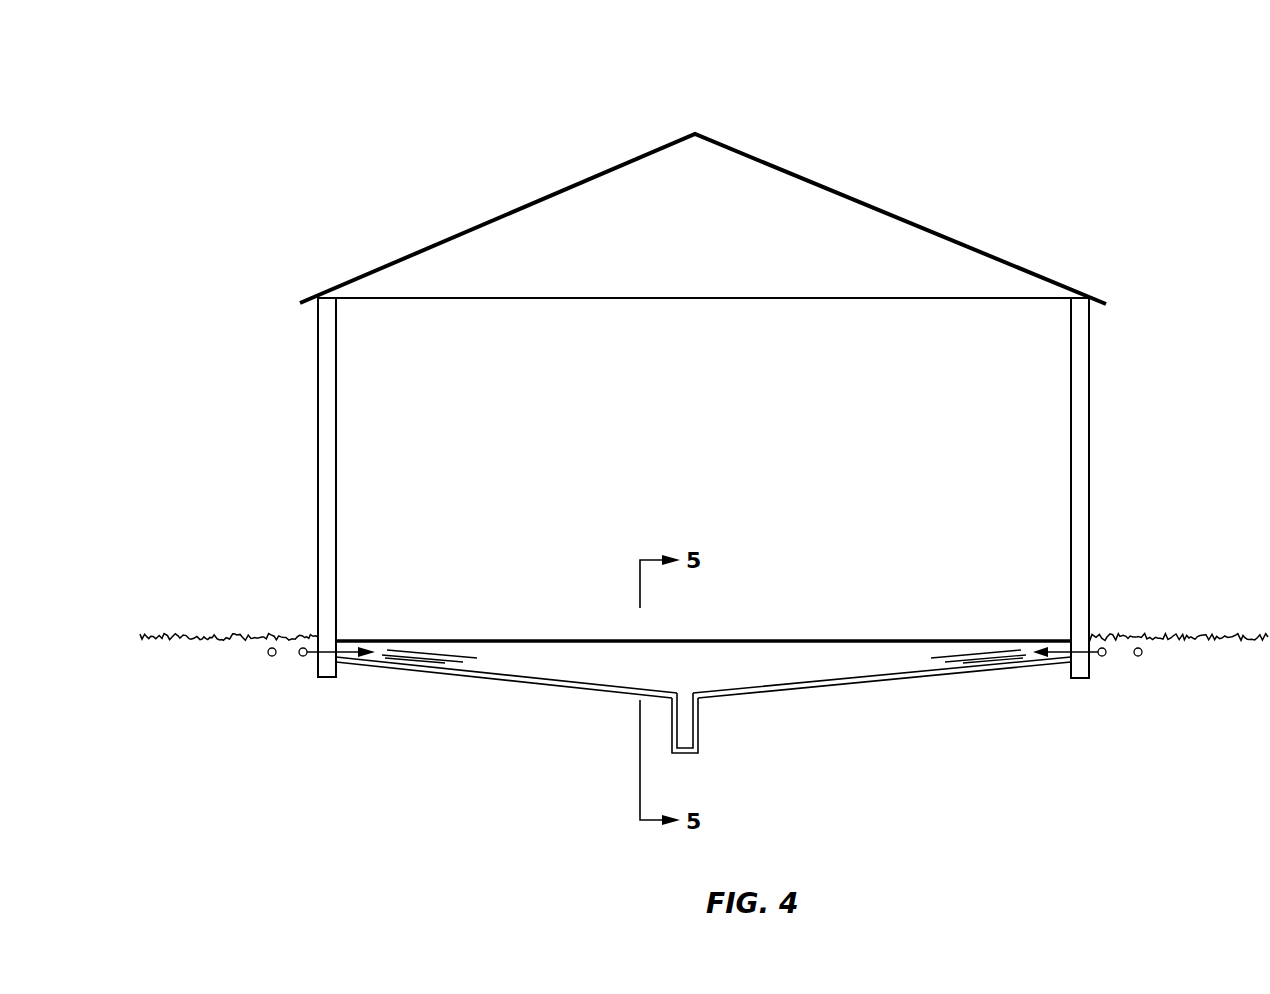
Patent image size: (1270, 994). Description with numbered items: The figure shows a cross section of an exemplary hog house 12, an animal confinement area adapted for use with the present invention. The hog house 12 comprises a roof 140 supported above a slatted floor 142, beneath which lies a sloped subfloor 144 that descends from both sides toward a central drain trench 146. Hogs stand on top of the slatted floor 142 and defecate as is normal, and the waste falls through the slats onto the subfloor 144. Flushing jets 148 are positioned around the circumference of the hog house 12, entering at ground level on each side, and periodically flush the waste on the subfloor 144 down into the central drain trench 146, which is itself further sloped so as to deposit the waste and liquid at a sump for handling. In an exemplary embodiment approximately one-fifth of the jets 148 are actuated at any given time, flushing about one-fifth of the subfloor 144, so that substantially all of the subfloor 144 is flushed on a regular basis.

The hog house 12 is at (1075, 100).
The roof 140 is at (913, 222).
The slatted floor 142 is at (845, 640).
The sloped subfloor 144 is at (740, 688).
The central drain trench 146 is at (697, 718).
The flushing jets 148 is at (303, 657).